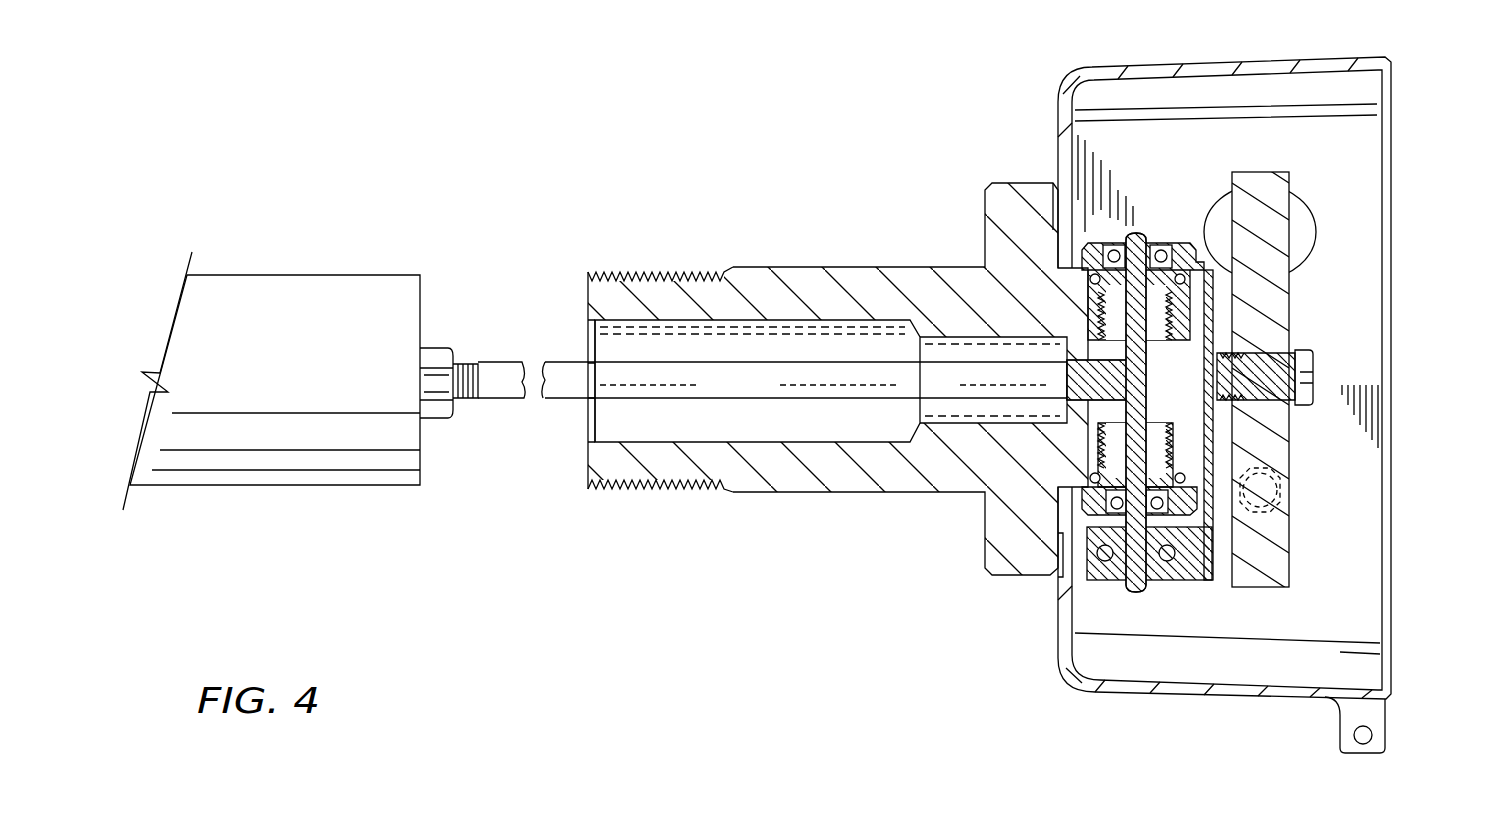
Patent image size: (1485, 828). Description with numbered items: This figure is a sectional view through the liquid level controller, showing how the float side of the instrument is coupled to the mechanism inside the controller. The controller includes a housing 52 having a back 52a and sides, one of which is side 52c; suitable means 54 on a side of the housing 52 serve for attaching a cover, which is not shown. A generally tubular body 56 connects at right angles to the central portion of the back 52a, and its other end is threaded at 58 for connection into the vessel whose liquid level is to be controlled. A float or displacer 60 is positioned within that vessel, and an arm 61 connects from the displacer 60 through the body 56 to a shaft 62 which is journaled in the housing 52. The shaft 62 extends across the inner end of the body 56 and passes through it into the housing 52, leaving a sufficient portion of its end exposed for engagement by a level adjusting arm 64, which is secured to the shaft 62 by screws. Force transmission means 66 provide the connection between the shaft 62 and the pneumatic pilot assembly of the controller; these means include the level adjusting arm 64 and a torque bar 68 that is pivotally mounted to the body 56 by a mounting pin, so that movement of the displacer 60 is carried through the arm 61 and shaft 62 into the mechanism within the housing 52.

The housing 52 is at (1186, 379).
The back 52a is at (1058, 126).
The side 52c is at (1205, 63).
The means for attaching a cover 54 is at (1388, 728).
The body 56 is at (820, 267).
The threaded end 58 is at (650, 279).
The float or displacer 60 is at (357, 275).
The arm 61 is at (562, 362).
The shaft 62 is at (1142, 592).
The level adjusting arm 64 is at (1183, 583).
The force transmission means 66 is at (1348, 463).
The torque bar 68 is at (1290, 565).